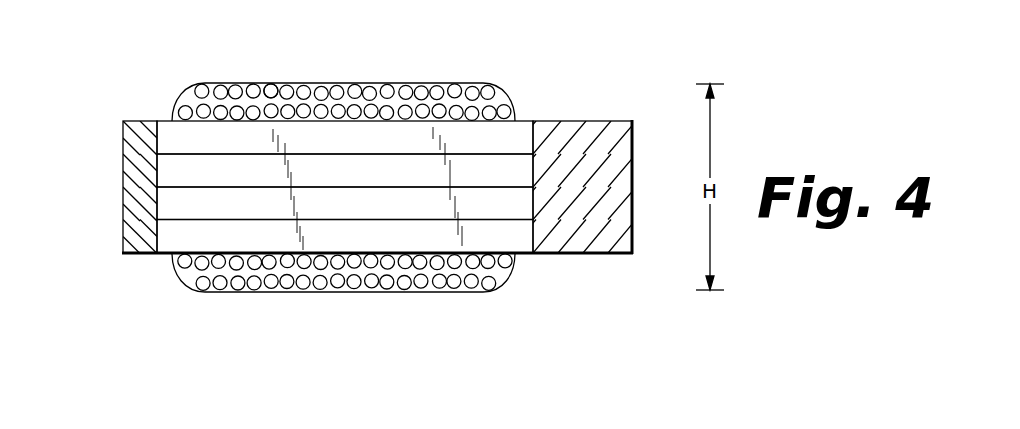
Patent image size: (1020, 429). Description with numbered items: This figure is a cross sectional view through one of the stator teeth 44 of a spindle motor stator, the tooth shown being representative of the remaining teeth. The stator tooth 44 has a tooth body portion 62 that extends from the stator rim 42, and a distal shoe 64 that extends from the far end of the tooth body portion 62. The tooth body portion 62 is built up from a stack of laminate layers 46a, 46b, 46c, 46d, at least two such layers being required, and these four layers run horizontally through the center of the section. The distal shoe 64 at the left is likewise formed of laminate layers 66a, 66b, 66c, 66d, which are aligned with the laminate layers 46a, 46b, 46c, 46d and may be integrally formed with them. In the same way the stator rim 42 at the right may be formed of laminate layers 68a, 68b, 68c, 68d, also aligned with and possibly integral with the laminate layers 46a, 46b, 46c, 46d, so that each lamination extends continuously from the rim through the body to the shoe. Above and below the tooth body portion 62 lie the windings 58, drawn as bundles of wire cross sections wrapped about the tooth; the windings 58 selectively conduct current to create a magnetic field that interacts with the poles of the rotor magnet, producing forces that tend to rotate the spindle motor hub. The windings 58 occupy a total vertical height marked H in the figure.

The stator rim 42 is at (632, 117).
The stator tooth 44 is at (123, 292).
The laminate layer 46a is at (232, 146).
The laminate layer 46b is at (232, 179).
The laminate layer 46c is at (232, 212).
The laminate layer 46d is at (232, 245).
The windings 58 is at (270, 84).
The tooth body portion 62 is at (532, 62).
The distal shoe 64 is at (157, 117).
The laminate layer 66a is at (123, 138).
The laminate layer 66b is at (123, 171).
The laminate layer 66c is at (123, 203).
The laminate layer 66d is at (123, 236).
The laminate layer 68a is at (633, 140).
The laminate layer 68b is at (633, 170).
The laminate layer 68c is at (633, 206).
The laminate layer 68d is at (633, 236).